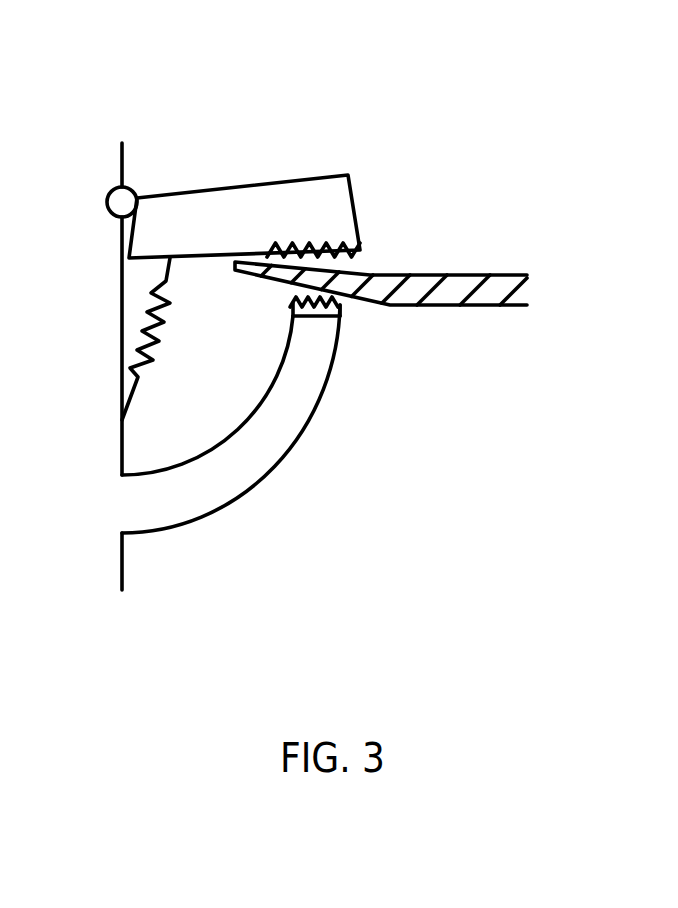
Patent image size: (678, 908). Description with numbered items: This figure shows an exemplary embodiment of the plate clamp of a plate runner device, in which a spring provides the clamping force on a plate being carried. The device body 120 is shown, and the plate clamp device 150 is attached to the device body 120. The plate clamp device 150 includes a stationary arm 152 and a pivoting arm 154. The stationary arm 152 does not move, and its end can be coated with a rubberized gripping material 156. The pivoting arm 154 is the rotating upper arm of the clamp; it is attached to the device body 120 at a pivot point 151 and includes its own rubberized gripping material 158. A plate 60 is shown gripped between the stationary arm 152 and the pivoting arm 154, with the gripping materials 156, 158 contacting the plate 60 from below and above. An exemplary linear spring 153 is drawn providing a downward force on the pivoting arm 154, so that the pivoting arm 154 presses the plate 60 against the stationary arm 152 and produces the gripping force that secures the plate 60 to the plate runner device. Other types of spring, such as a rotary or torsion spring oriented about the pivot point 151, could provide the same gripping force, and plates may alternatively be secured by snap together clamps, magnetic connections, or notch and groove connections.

The plate 60 is at (445, 272).
The device body 120 is at (113, 562).
The plate clamp device 150 is at (400, 603).
The pivot point 151 is at (137, 190).
The stationary arm 152 is at (290, 423).
The linear spring 153 is at (133, 302).
The pivoting arm 154 is at (275, 192).
The rubberized gripping material 156 is at (348, 308).
The rubberized gripping material 158 is at (362, 242).